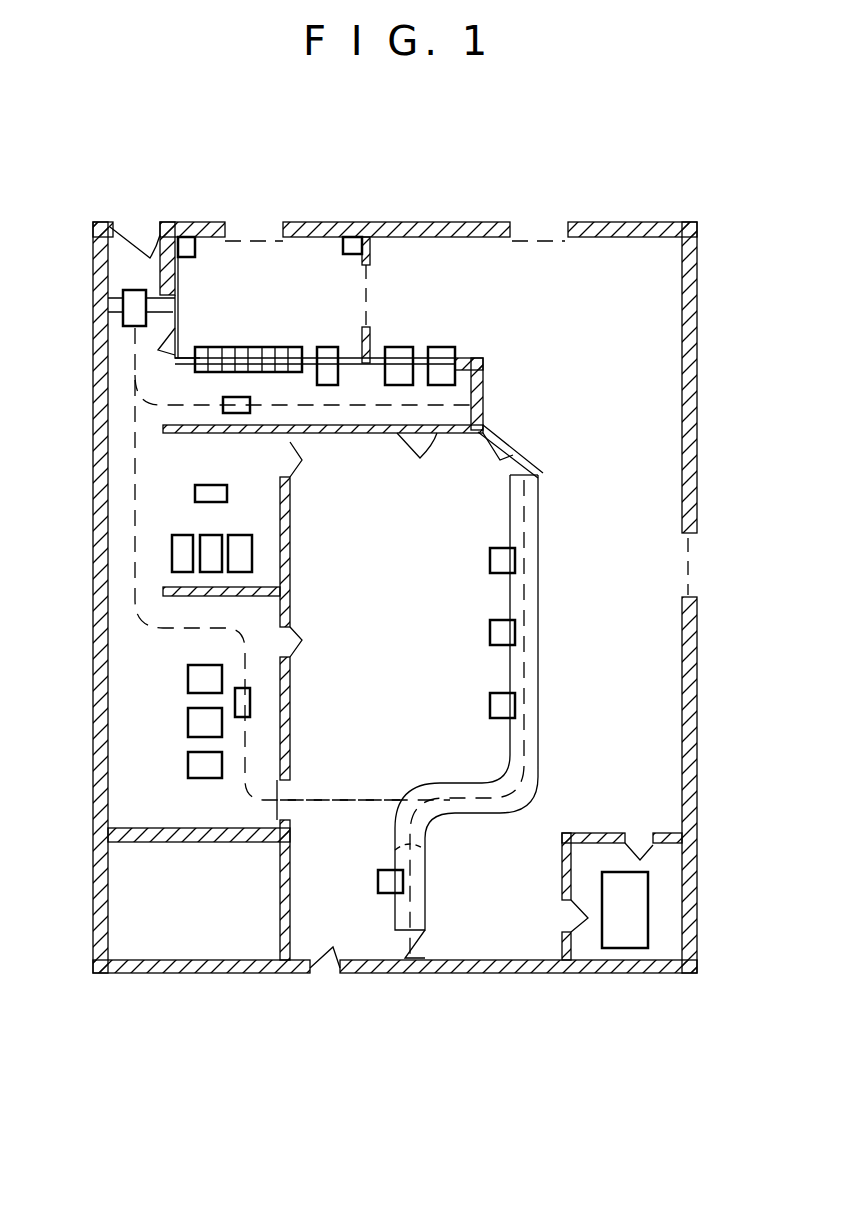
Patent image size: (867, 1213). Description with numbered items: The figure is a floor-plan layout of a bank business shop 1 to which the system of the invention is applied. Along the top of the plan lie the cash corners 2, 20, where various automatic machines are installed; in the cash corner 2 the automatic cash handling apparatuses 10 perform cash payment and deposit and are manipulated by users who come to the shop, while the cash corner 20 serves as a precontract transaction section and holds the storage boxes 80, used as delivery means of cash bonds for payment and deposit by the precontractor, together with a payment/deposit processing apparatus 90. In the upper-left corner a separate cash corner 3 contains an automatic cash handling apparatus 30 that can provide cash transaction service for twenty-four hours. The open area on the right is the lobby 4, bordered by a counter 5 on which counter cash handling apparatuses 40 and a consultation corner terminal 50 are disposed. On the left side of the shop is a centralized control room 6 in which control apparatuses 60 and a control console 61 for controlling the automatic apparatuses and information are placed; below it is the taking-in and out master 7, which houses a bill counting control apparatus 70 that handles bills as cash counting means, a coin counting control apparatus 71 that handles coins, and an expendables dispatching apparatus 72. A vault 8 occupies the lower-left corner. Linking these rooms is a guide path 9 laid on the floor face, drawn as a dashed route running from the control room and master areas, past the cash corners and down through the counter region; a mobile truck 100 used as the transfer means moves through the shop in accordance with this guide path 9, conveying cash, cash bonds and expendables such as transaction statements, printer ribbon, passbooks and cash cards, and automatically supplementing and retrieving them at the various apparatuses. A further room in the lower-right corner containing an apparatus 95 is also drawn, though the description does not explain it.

The business shop 1 is at (405, 224).
The cash corner 2 is at (447, 250).
The cash corner 3 is at (118, 255).
The lobby 4 is at (690, 497).
The counter 5 is at (540, 545).
The centralized control room 6 is at (150, 547).
The taking-in and out master 7 is at (130, 648).
The vault 8 is at (195, 935).
The guide path 9 is at (357, 800).
The automatic cash handling apparatus 10 is at (328, 347).
The cash corner 20 is at (312, 250).
The automatic cash handling apparatus 30 is at (125, 318).
The counter cash handling apparatus 40 is at (490, 562).
The consultation corner terminal 50 is at (490, 708).
The control apparatus 60 is at (178, 537).
The control console 61 is at (205, 485).
The bill counting control apparatus 70 is at (188, 680).
The coin counting control apparatus 71 is at (188, 722).
The expendables dispatching apparatus 72 is at (188, 768).
The storage box 80 is at (292, 347).
The payment/deposit processing apparatus 90 is at (208, 237).
The apparatus 95 is at (640, 900).
The mobile truck 100 is at (246, 413).